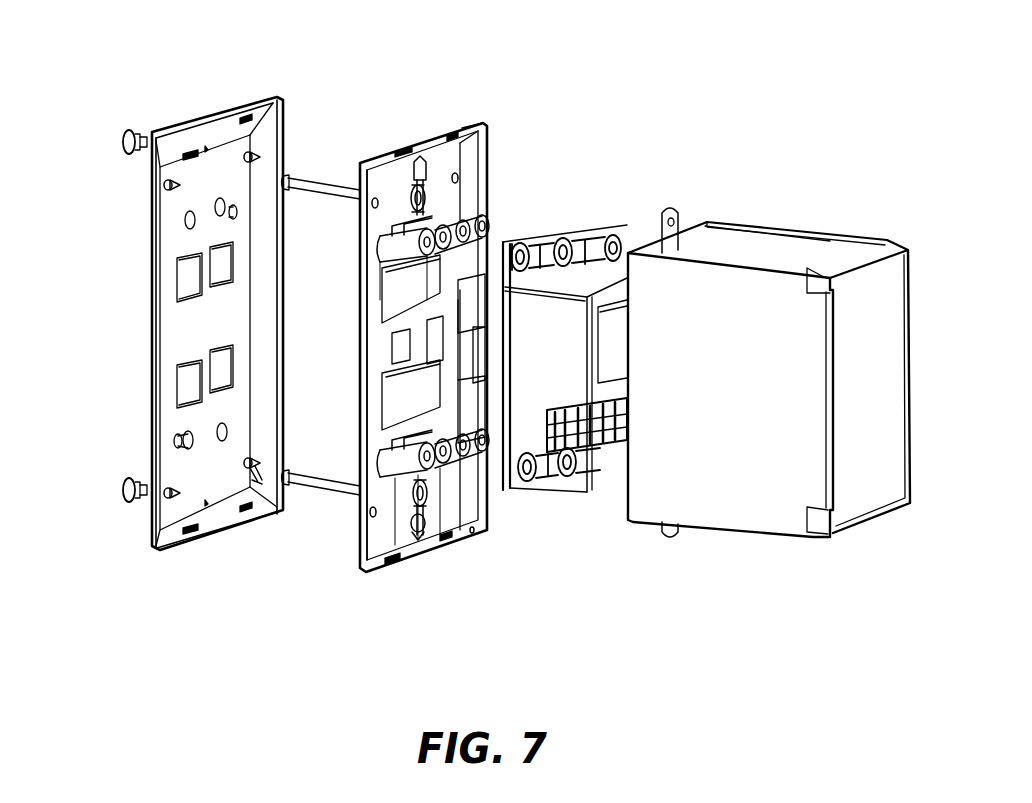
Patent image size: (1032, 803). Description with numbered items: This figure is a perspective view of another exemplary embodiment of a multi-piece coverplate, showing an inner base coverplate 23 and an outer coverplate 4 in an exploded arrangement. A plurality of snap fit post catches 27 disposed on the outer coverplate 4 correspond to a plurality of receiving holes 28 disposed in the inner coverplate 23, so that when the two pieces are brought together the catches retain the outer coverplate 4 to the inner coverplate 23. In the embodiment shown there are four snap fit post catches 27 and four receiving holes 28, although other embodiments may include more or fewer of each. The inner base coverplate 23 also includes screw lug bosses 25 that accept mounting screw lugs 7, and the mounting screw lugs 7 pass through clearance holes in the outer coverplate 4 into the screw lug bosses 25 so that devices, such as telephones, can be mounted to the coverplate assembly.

The outer coverplate 4 is at (220, 113).
The mounting screw lugs 7 is at (122, 147).
The inner base coverplate 23 is at (487, 192).
The screw lug bosses 25 is at (427, 167).
The snap fit post catches 27 is at (258, 152).
The receiving holes 28 is at (376, 198).